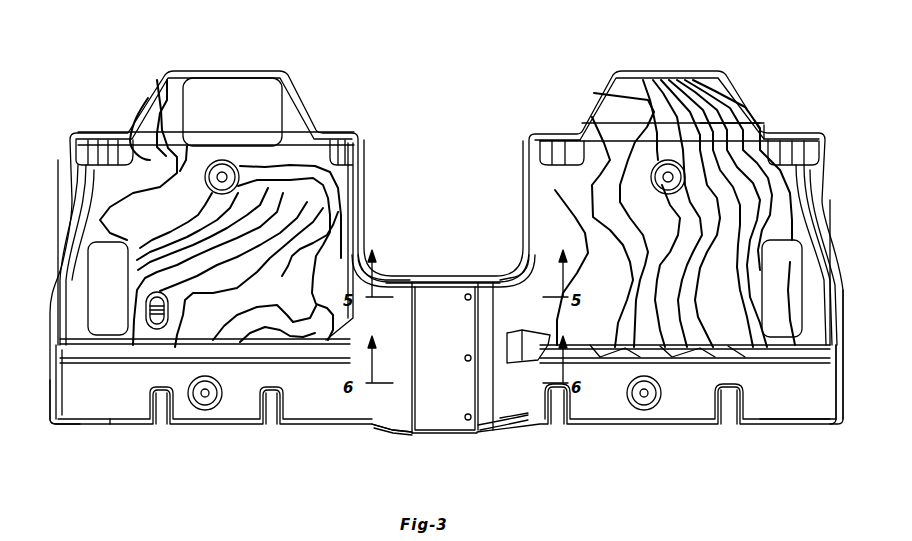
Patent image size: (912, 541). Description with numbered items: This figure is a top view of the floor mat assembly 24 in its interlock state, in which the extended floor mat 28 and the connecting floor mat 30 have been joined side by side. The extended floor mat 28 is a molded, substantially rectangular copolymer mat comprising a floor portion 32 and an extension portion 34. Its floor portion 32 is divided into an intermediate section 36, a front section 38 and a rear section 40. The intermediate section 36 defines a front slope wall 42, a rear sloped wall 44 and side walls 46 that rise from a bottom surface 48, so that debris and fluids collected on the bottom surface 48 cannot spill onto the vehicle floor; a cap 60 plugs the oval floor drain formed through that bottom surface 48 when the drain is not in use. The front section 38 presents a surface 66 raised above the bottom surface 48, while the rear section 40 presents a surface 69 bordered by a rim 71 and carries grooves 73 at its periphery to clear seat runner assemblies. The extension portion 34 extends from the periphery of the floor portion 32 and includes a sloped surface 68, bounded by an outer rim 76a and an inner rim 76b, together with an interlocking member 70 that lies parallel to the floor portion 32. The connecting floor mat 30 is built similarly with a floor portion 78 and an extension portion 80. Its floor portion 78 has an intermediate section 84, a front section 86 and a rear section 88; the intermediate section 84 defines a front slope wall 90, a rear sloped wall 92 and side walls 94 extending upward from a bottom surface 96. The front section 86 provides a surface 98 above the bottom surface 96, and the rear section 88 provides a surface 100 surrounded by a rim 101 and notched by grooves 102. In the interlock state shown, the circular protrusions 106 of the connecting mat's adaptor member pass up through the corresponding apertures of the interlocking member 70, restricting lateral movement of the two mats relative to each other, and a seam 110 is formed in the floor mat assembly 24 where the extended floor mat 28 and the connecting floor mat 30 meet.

The floor mat assembly 24 is at (460, 105).
The extended floor mat 28 is at (172, 62).
The connecting floor mat 30 is at (658, 53).
The floor portion 32 is at (338, 120).
The extension portion 34 is at (424, 267).
The intermediate section 36 is at (75, 215).
The front section 38 is at (150, 100).
The rear section 40 is at (45, 415).
The front slope wall 42 is at (150, 135).
The rear sloped wall 44 is at (125, 352).
The side walls 46 is at (95, 190).
The bottom surface 48 is at (125, 240).
The cap 60 is at (152, 332).
The surface 66 is at (230, 100).
The sloped surface 68 is at (403, 408).
The surface 69 is at (77, 408).
The interlocking member 70 is at (447, 300).
The rim 71 is at (213, 422).
The grooves 73 is at (161, 412).
The outer rim 76a is at (393, 430).
The inner rim 76b is at (395, 283).
The floor portion 78 is at (846, 312).
The extension portion 80 is at (508, 265).
The intermediate section 84 is at (833, 260).
The front section 86 is at (605, 85).
The rear section 88 is at (637, 422).
The front slope wall 90 is at (735, 135).
The rear sloped wall 92 is at (697, 353).
The side walls 94 is at (540, 185).
The bottom surface 96 is at (796, 355).
The surface 98 is at (708, 100).
The surface 100 is at (815, 405).
The rim 101 is at (797, 422).
The grooves 102 is at (557, 412).
The circular protrusions 106 is at (466, 356).
The seam 110 is at (478, 408).